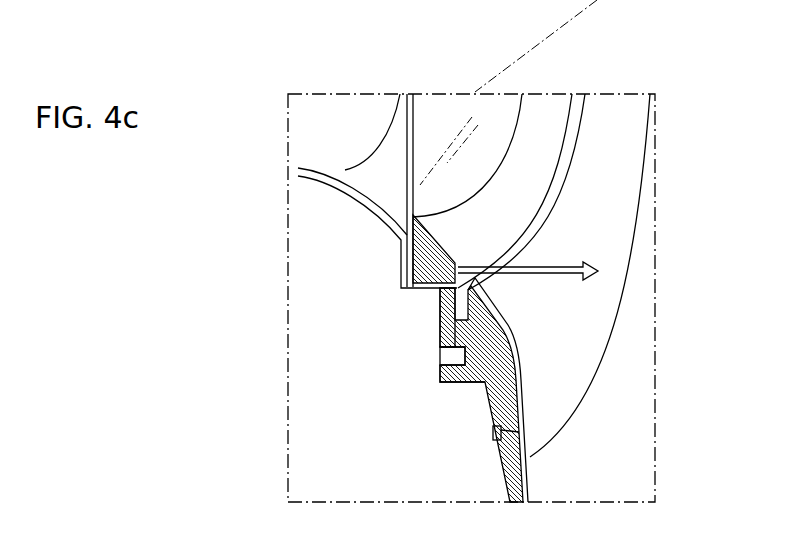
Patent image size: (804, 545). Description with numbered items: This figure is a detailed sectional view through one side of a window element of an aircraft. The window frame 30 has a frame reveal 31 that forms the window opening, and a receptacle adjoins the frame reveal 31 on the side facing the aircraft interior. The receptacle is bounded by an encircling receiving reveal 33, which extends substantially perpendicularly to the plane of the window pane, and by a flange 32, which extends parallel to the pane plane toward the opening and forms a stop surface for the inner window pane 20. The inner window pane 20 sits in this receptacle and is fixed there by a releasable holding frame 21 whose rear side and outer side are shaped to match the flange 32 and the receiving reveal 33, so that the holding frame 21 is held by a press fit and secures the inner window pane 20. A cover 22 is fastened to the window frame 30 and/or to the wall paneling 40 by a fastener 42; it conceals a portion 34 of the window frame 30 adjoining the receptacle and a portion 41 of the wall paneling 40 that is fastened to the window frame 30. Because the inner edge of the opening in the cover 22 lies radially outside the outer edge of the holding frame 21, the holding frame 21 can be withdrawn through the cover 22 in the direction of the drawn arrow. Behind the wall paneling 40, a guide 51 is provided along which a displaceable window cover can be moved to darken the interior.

The inner window pane 20 is at (438, 100).
The holding frame 21 is at (558, 98).
The cover 22 is at (621, 99).
The window frame 30 is at (316, 191).
The frame reveal 31 is at (347, 168).
The flange 32 is at (400, 268).
The receiving reveal 33 is at (438, 293).
The portion of the window frame 34 is at (440, 330).
The wall paneling 40 is at (632, 455).
The portion of the wall paneling 41 is at (522, 356).
The fastener 42 is at (495, 432).
The guide 51 is at (500, 292).